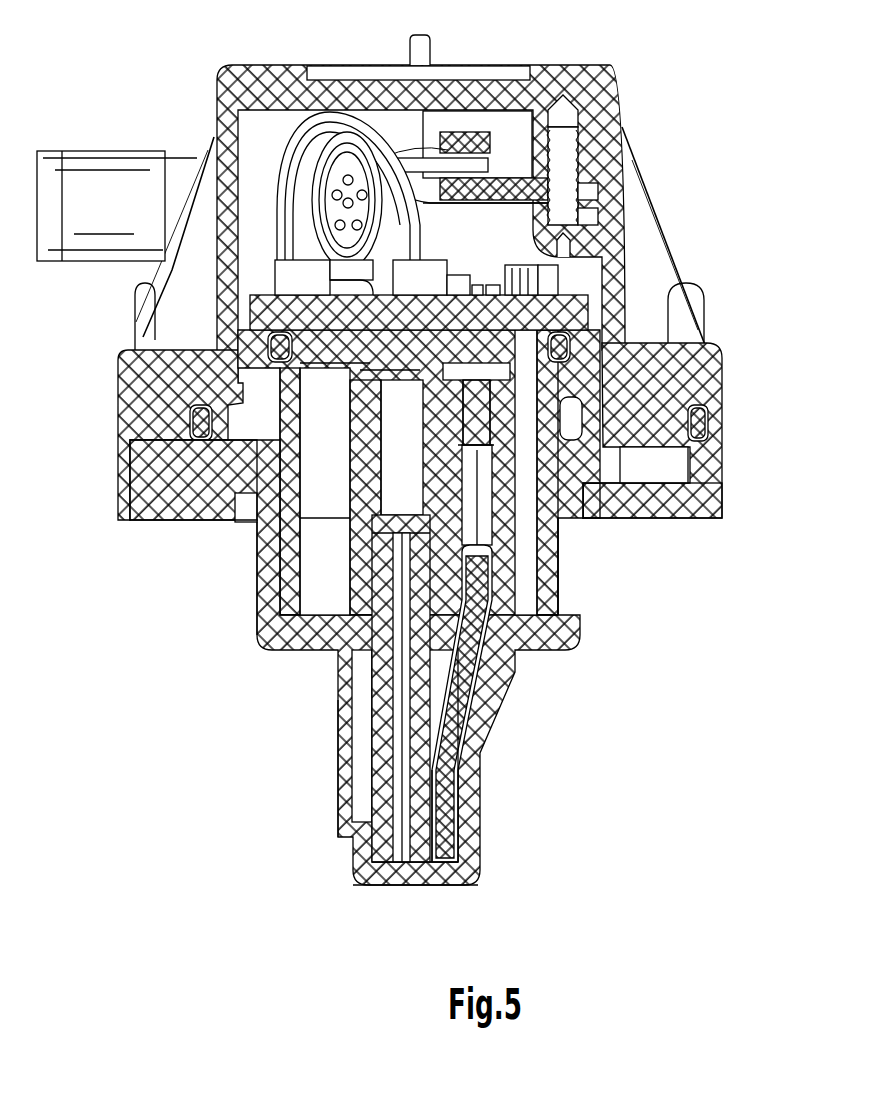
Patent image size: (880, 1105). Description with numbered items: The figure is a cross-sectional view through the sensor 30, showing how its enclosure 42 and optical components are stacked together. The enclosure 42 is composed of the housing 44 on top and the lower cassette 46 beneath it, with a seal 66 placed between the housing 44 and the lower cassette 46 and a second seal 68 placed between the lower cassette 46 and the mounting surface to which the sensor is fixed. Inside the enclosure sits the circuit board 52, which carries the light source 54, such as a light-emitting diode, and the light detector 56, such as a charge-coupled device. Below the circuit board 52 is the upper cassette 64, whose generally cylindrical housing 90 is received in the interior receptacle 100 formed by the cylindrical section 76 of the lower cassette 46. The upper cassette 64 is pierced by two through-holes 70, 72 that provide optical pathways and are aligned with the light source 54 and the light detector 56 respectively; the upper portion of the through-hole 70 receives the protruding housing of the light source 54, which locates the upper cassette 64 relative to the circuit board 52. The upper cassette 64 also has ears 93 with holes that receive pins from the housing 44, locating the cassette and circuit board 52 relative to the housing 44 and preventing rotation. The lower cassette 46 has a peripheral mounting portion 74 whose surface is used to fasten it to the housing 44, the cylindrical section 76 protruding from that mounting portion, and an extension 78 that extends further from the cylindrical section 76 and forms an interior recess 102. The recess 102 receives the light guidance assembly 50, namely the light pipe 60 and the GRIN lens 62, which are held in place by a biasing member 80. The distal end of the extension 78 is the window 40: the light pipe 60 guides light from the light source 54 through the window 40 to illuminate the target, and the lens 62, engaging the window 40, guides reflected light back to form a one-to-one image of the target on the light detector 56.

The sensor 30 is at (683, 126).
The window 40 is at (411, 870).
The enclosure 42 is at (621, 70).
The housing 44 is at (712, 378).
The lower cassette 46 is at (688, 498).
The light guidance assembly 50 is at (455, 783).
The circuit board 52 is at (588, 313).
The light source 54 is at (546, 590).
The light detector 56 is at (367, 364).
The light pipe 60 is at (452, 795).
The GRIN lens 62 is at (380, 862).
The upper cassette 64 is at (555, 598).
The seal 66 is at (706, 426).
The seal 68 is at (593, 510).
The through-hole 70 is at (477, 430).
The through-hole 72 is at (393, 478).
The peripheral mounting portion 74 is at (138, 530).
The cylindrical section 76 is at (258, 600).
The extension 78 is at (340, 814).
The biasing member 80 is at (366, 757).
The cylindrical housing 90 is at (290, 537).
The ears 93 is at (650, 427).
The interior receptacle 100 is at (562, 603).
The interior recess 102 is at (462, 846).